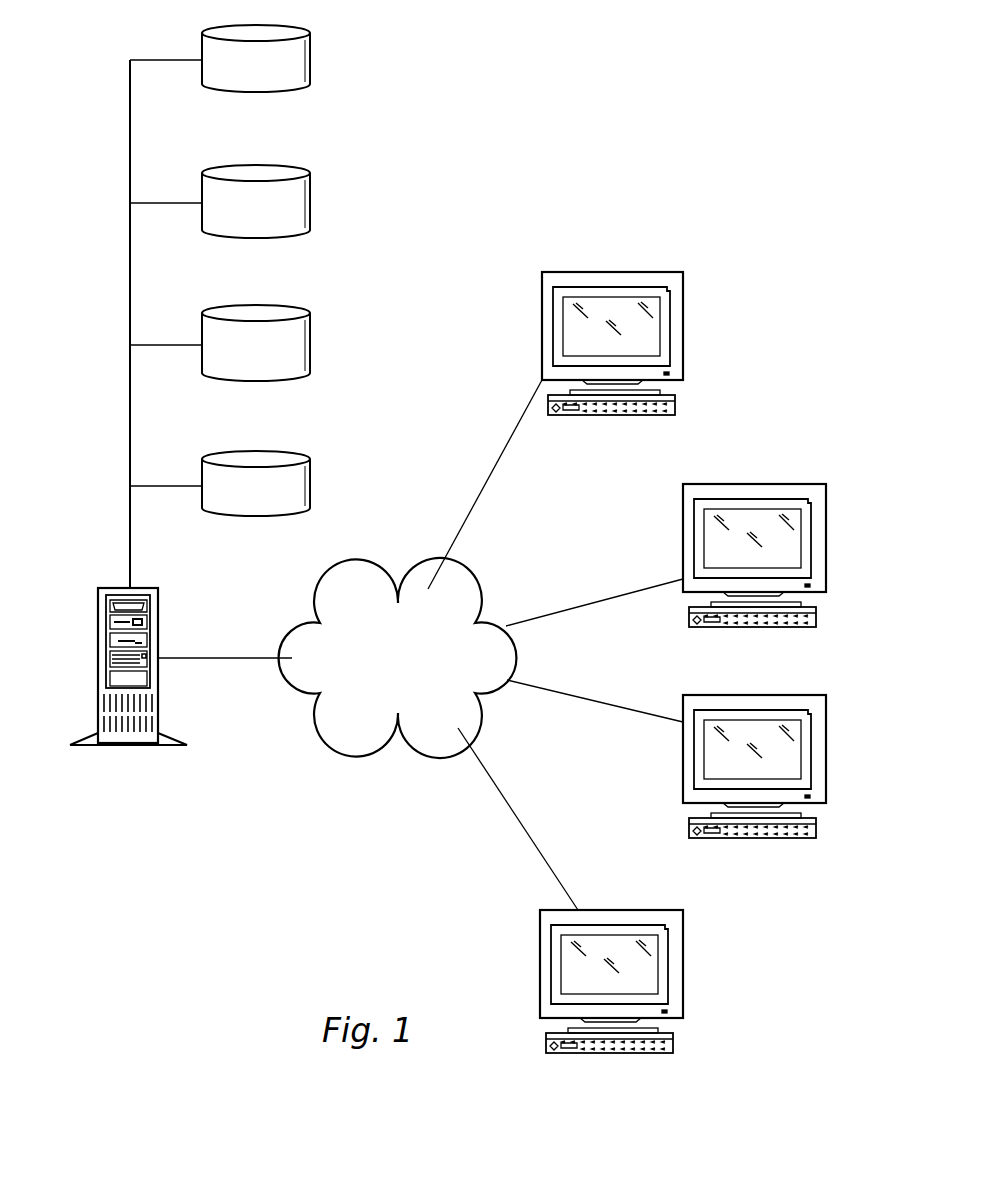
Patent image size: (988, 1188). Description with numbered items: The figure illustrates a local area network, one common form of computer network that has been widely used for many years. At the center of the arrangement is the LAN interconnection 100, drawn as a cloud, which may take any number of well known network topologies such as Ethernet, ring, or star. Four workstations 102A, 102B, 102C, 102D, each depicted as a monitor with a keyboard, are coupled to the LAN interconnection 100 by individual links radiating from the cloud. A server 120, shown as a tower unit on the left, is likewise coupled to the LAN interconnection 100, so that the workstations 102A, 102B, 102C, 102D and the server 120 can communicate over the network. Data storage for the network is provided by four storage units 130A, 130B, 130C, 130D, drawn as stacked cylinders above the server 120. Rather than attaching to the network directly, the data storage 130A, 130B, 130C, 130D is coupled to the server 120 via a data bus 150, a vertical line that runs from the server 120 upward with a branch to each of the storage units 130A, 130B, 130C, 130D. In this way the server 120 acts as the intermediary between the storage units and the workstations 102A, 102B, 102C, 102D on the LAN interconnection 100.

The LAN interconnection 100 is at (420, 685).
The workstation 102A is at (683, 331).
The workstation 102B is at (827, 538).
The workstation 102C is at (827, 750).
The workstation 102D is at (683, 966).
The server 120 is at (98, 637).
The data storage 130A is at (284, 80).
The data storage 130B is at (284, 220).
The data storage 130C is at (284, 362).
The data storage 130D is at (284, 504).
The data bus 150 is at (130, 423).